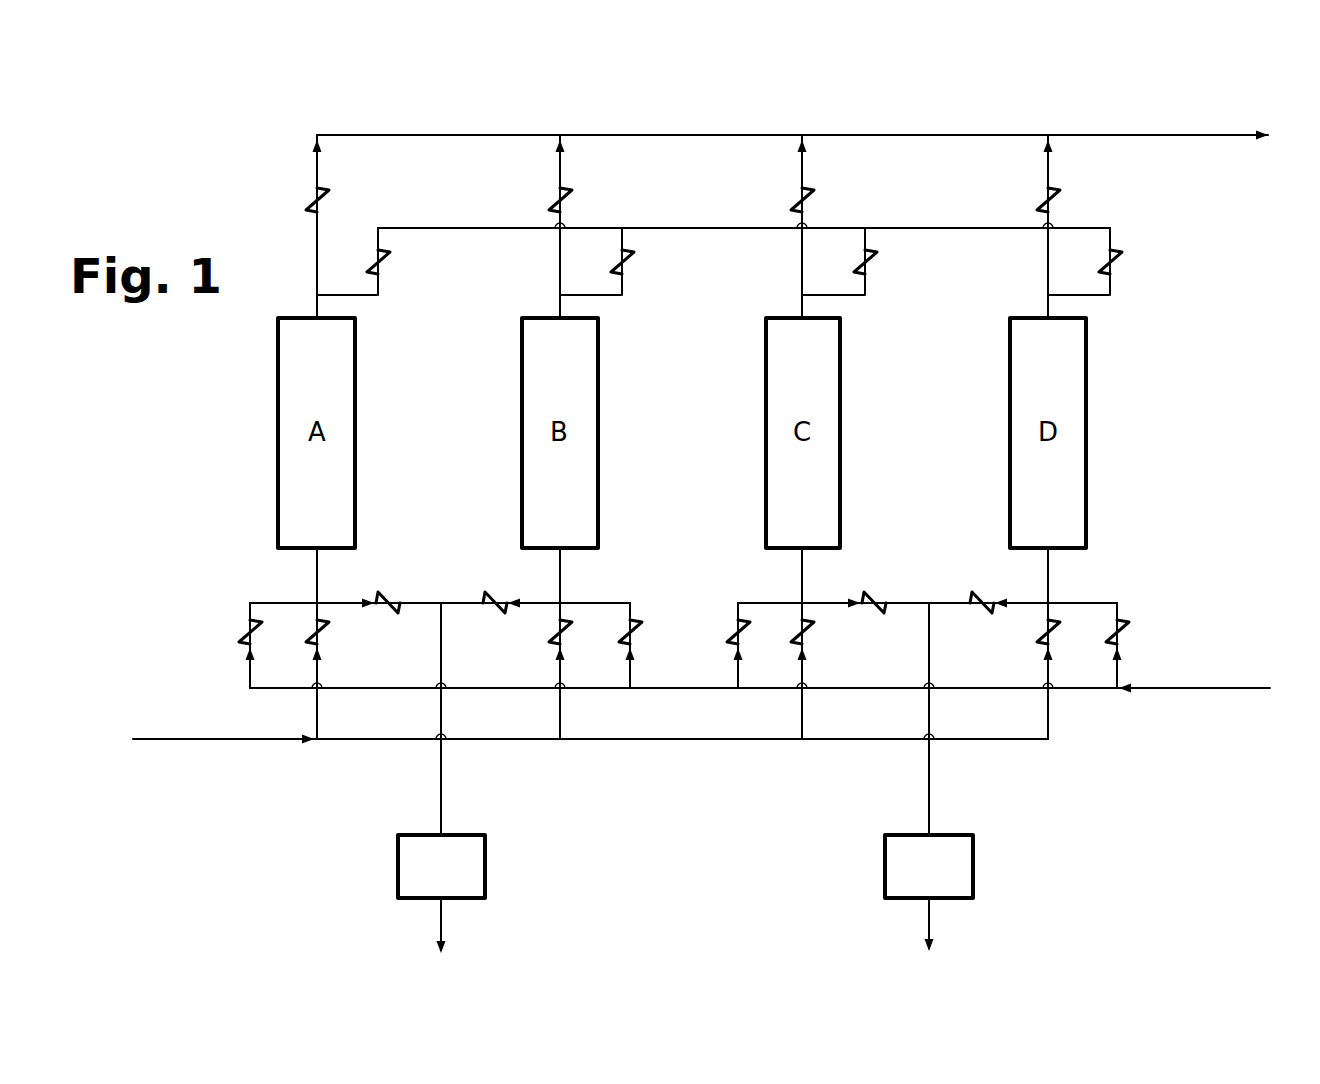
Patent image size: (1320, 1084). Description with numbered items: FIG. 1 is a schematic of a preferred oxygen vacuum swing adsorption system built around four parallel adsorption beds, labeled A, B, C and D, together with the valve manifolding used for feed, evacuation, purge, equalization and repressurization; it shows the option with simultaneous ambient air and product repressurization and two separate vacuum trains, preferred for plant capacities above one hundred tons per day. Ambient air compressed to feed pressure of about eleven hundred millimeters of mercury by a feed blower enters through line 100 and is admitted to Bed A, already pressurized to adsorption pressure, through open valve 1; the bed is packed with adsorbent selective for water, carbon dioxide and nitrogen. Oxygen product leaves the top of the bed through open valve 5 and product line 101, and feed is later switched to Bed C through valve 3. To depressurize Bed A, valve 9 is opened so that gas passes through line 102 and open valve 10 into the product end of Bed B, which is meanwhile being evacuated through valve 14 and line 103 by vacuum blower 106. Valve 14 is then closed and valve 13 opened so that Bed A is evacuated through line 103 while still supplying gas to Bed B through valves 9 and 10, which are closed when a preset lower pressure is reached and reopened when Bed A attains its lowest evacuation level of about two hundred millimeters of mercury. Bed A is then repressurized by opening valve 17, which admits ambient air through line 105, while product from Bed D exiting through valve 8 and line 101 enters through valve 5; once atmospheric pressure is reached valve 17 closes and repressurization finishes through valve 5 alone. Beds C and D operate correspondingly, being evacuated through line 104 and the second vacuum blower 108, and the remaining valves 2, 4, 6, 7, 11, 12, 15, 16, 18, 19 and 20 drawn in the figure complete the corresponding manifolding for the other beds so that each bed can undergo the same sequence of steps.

The valve 1 is at (322, 640).
The valve 2 is at (553, 641).
The valve 3 is at (808, 637).
The valve 4 is at (1040, 636).
The valve 5 is at (307, 196).
The valve 6 is at (550, 197).
The valve 7 is at (792, 196).
The valve 8 is at (1038, 195).
The valve 9 is at (382, 262).
The valve 10 is at (626, 262).
The valve 11 is at (869, 262).
The valve 12 is at (1114, 260).
The valve 13 is at (383, 590).
The valve 14 is at (500, 591).
The valve 15 is at (868, 590).
The valve 16 is at (988, 591).
The valve 17 is at (246, 638).
The valve 18 is at (635, 637).
The valve 19 is at (730, 633).
The valve 20 is at (1122, 633).
The line 100 is at (247, 737).
The line 101 is at (1125, 131).
The line 102 is at (972, 226).
The line 103 is at (443, 775).
The line 104 is at (931, 775).
The line 105 is at (1157, 687).
The vacuum blower 106 is at (425, 833).
The vacuum blower 108 is at (975, 856).